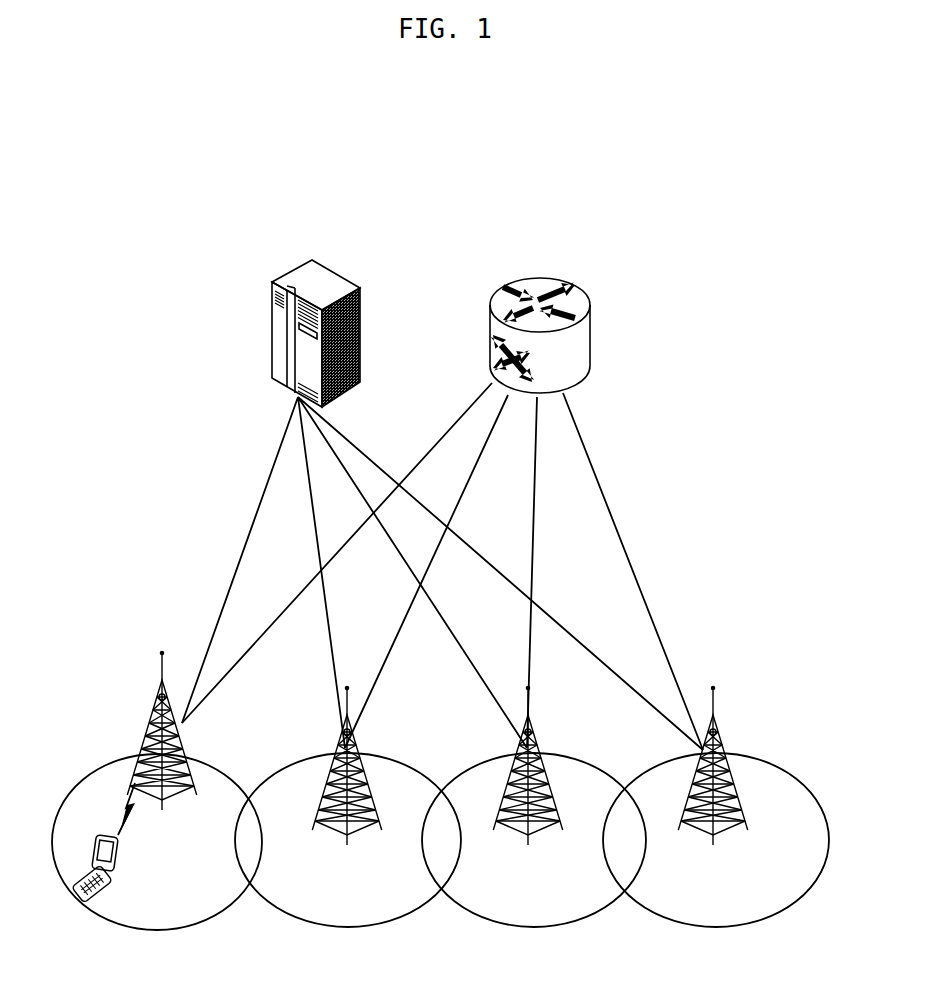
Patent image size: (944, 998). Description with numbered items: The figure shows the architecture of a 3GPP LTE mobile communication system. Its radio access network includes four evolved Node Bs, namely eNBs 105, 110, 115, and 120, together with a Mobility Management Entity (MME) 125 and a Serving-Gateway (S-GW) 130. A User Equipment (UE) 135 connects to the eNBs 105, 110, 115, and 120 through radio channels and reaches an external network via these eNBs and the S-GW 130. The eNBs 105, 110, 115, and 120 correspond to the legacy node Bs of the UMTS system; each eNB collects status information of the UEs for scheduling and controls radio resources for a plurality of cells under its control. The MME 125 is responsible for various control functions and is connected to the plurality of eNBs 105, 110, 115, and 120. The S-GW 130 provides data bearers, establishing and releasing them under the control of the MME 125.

The evolved Node B 105 is at (150, 708).
The evolved Node B 110 is at (340, 732).
The evolved Node B 115 is at (537, 732).
The evolved Node B 120 is at (720, 732).
The Mobility Management Entity 125 is at (302, 280).
The Serving-Gateway 130 is at (532, 282).
The User Equipment 135 is at (115, 870).